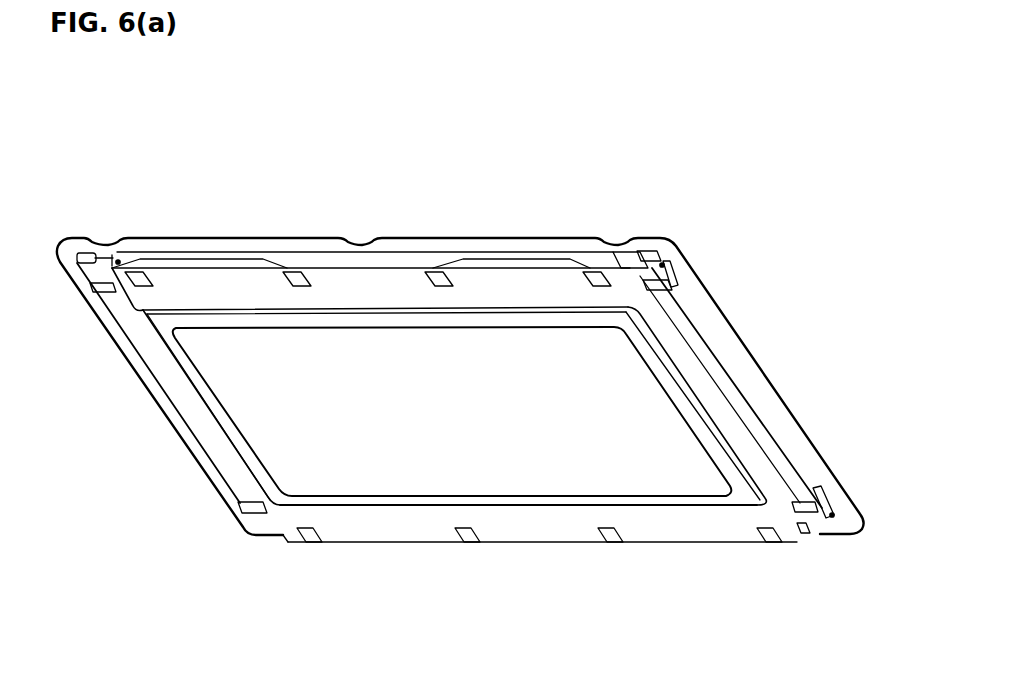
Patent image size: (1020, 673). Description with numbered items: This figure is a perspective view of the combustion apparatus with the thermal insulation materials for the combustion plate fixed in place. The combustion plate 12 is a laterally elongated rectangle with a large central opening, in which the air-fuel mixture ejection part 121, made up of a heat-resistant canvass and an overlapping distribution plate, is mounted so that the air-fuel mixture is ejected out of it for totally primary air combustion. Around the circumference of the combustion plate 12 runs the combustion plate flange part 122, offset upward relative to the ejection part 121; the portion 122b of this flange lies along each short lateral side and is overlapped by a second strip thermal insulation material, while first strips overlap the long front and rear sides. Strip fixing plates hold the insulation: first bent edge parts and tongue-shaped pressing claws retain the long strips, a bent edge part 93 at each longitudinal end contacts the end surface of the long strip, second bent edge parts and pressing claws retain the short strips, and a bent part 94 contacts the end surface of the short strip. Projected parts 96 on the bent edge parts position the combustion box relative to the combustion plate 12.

The combustion plate 12 is at (748, 331).
The combustion plate flange part 122 is at (487, 247).
The portion of the combustion plate flange part along lateral sides 122b is at (145, 382).
The air-fuel mixture ejection part 121 is at (568, 462).
The bent edge part 93 is at (620, 252).
The bent part 94 is at (84, 254).
The projected part 96 is at (121, 262).